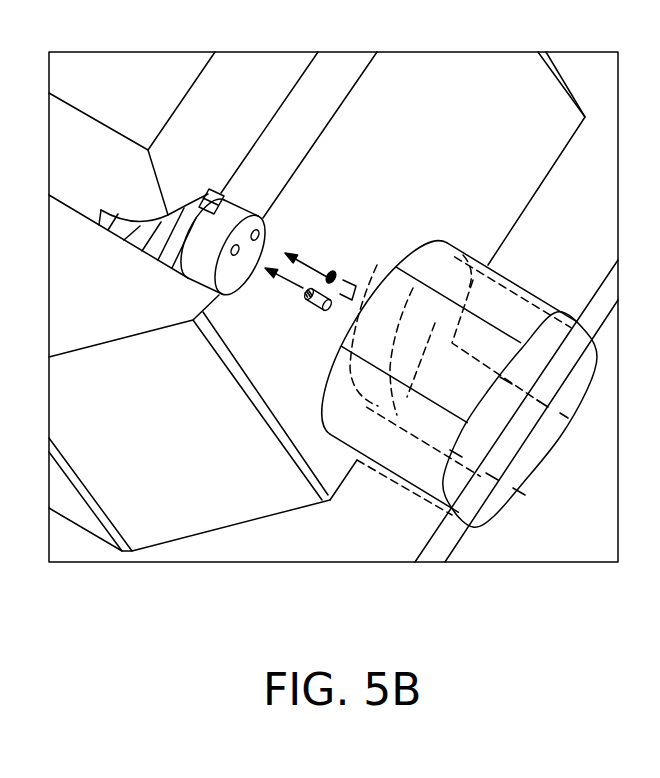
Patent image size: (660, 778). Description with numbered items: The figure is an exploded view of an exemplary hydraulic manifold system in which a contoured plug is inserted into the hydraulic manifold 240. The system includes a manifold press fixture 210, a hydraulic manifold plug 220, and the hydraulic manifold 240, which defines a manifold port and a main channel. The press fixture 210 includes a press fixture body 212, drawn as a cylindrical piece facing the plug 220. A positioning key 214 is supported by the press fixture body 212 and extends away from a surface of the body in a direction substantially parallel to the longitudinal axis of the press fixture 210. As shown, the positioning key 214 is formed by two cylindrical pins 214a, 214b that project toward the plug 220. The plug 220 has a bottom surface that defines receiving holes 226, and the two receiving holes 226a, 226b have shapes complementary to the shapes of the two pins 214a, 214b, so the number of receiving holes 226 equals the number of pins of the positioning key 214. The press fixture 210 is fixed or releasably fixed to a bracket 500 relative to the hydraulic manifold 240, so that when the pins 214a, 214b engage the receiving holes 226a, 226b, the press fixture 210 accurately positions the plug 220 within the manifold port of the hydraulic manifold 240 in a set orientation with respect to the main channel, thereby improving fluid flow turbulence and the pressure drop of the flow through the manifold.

The manifold press fixture 210 is at (507, 277).
The press fixture body 212 is at (390, 488).
The positioning key 214 is at (327, 285).
The pin 214a is at (308, 300).
The pin 214b is at (334, 273).
The hydraulic manifold plug 220 is at (158, 262).
The receiving hole 226 is at (285, 254).
The receiving hole 226a is at (235, 256).
The receiving hole 226b is at (224, 198).
The hydraulic manifold 240 is at (478, 78).
The bracket 500 is at (470, 548).